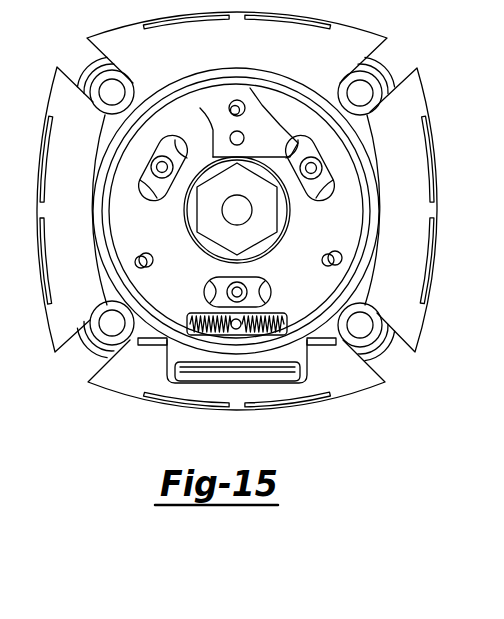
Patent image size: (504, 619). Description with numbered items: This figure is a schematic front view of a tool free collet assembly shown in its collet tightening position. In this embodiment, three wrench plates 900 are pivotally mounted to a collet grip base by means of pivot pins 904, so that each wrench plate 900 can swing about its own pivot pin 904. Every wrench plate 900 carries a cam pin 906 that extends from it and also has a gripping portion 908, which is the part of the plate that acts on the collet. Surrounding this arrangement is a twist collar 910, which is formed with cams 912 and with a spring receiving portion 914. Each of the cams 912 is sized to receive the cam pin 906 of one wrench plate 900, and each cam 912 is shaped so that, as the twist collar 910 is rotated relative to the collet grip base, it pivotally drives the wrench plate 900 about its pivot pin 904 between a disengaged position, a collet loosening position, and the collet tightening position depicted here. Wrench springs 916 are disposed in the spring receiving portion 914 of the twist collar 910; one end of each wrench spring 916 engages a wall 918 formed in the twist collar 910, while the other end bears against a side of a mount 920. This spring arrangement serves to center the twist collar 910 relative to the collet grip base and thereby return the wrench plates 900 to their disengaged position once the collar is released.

The wrench plate 900 is at (275, 133).
The pivot pin 904 is at (230, 137).
The cam pin 906 is at (237, 100).
The gripping portion 908 is at (262, 160).
The twist collar 910 is at (378, 203).
The cam 912 is at (334, 253).
The spring receiving portion 914 is at (188, 311).
The wrench spring 916 is at (199, 314).
The wall 918 is at (189, 328).
The mount 920 is at (236, 333).